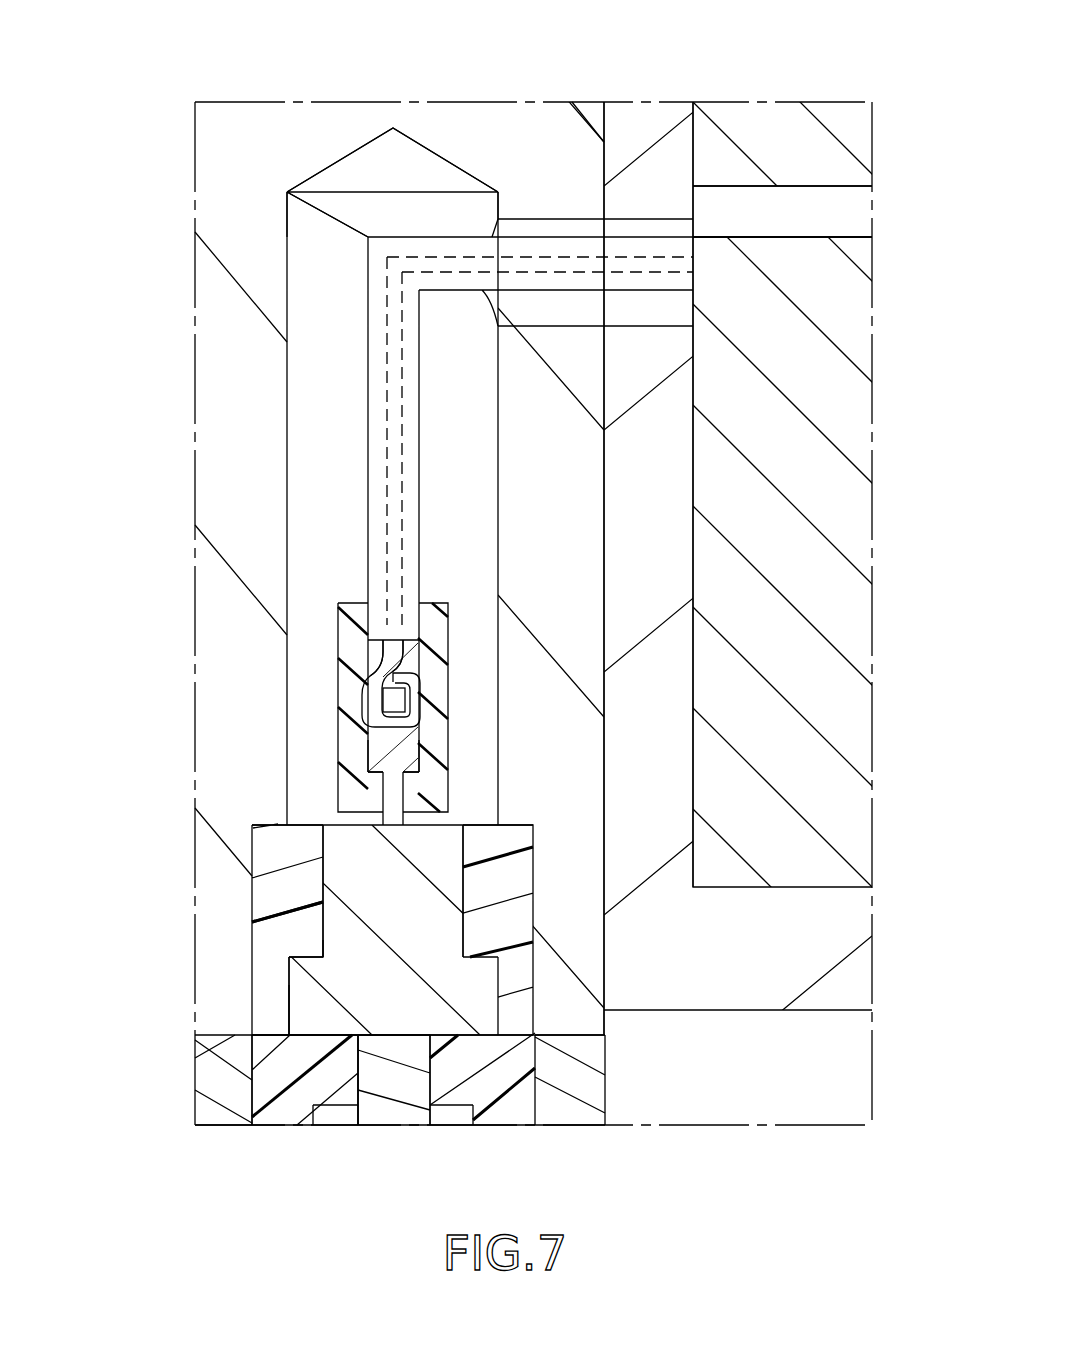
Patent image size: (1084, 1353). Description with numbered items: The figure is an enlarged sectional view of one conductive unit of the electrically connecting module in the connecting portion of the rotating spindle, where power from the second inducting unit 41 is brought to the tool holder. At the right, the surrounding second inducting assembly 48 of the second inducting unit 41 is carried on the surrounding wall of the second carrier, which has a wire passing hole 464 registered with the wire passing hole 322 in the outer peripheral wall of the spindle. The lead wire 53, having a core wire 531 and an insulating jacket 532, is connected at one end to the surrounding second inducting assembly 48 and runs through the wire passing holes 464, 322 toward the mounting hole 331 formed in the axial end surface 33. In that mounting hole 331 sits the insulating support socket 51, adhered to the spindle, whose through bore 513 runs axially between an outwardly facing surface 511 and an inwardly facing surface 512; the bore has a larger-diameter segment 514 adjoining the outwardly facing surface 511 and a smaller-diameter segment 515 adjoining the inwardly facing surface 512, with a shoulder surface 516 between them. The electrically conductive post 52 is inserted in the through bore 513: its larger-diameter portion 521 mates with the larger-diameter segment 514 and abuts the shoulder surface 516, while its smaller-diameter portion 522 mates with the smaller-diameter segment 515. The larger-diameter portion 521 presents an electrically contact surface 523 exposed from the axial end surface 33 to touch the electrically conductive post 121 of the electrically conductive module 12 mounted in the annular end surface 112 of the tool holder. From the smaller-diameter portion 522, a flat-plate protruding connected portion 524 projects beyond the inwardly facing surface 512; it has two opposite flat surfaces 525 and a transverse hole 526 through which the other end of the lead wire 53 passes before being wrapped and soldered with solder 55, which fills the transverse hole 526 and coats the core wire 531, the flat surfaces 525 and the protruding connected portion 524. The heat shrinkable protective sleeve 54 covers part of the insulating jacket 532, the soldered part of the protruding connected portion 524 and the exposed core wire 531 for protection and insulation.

The electrically conductive module 12 is at (252, 1092).
The annular end surface 112 is at (568, 1035).
The electrically conductive post 121 is at (400, 1082).
The axial end surface 33 is at (558, 1035).
The wire passing hole 322 is at (550, 219).
The mounting hole 331 is at (317, 297).
The second inducting unit 41 is at (874, 398).
The wire passing hole 464 is at (648, 219).
The surrounding second inducting assembly 48 is at (783, 530).
The insulating support socket 51 is at (280, 890).
The outwardly facing surface 511 is at (272, 1032).
The inwardly facing surface 512 is at (308, 826).
The through bore 513 is at (283, 975).
The larger-diameter segment 514 is at (283, 993).
The smaller-diameter segment 515 is at (318, 915).
The shoulder surface 516 is at (318, 952).
The electrically conductive post 52 is at (318, 850).
The larger-diameter portion 521 is at (367, 1007).
The smaller-diameter portion 522 is at (380, 887).
The electrically contact surface 523 is at (312, 1035).
The protruding connected portion 524 is at (368, 682).
The flat surface 525 is at (415, 805).
The transverse hole 526 is at (390, 753).
The lead wire 53 is at (410, 220).
The core wire 531 is at (390, 697).
The insulating jacket 532 is at (402, 210).
The heat shrinkable protective sleeve 54 is at (343, 612).
The solder 55 is at (383, 737).